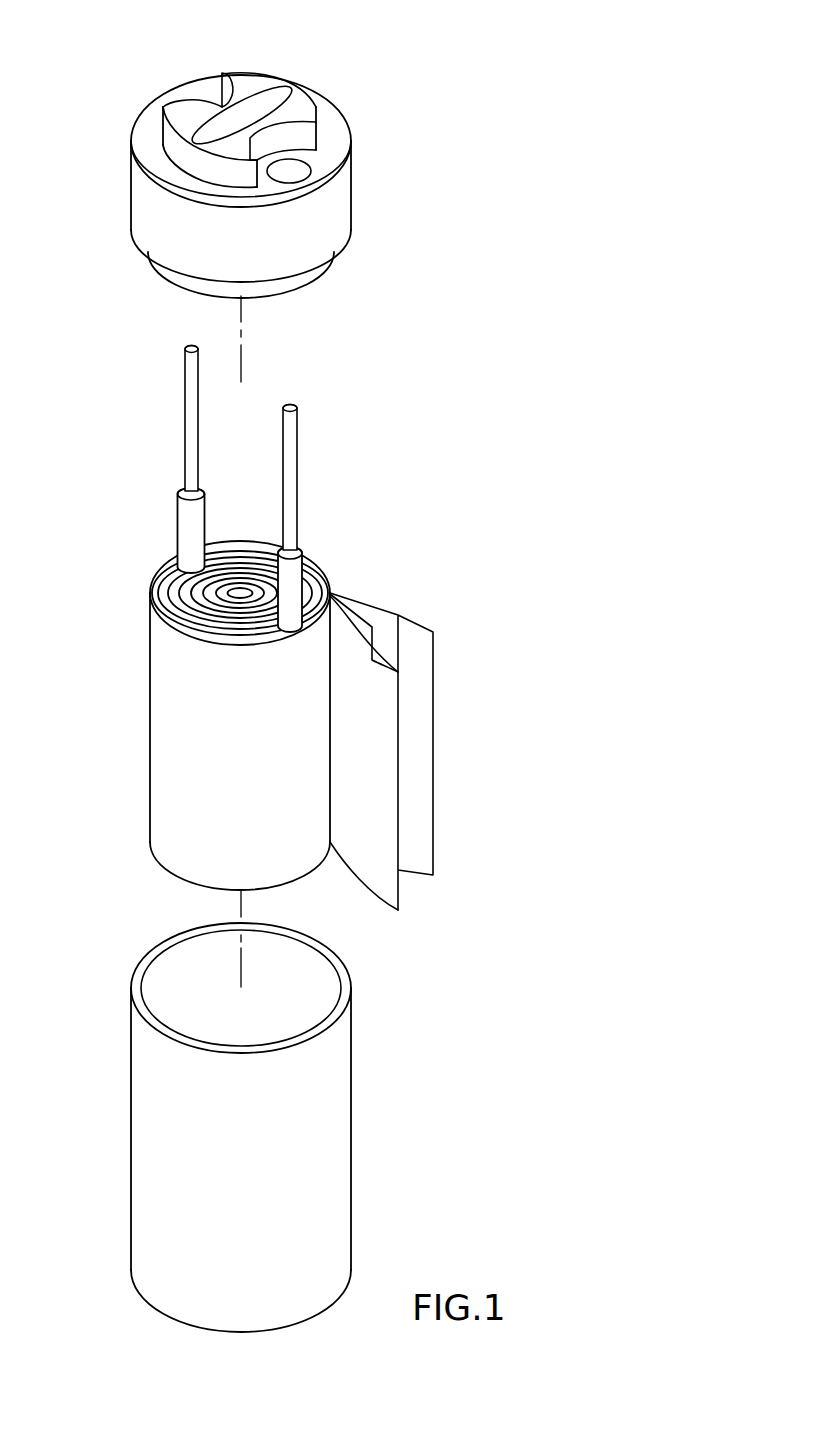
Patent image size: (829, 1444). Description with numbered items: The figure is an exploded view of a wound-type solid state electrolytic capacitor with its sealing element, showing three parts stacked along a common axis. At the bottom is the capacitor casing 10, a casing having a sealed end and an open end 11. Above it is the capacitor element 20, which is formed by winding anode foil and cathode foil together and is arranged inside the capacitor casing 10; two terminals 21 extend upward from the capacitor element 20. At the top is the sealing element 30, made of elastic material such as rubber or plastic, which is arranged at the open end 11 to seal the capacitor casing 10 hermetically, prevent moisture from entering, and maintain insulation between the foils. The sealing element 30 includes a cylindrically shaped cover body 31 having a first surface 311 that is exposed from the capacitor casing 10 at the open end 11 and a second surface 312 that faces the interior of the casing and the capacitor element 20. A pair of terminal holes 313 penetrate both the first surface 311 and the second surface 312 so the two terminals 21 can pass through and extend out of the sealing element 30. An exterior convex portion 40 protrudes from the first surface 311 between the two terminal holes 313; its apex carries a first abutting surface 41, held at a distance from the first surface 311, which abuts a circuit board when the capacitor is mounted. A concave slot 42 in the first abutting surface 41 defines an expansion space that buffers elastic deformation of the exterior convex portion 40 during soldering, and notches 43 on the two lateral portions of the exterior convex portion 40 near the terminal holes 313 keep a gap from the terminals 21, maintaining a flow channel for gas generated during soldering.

The capacitor casing 10 is at (211, 1127).
The open end 11 is at (143, 962).
The capacitor element 20 is at (261, 628).
The terminals 21 is at (185, 437).
The sealing element 30 is at (238, 157).
The cover body 31 is at (333, 220).
The first surface 311 is at (327, 130).
The second surface 312 is at (307, 272).
The terminal holes 313 is at (188, 107).
The exterior convex portion 40 is at (265, 102).
The first abutting surface 41 is at (307, 107).
The slot 42 is at (247, 110).
The notches 43 is at (213, 103).